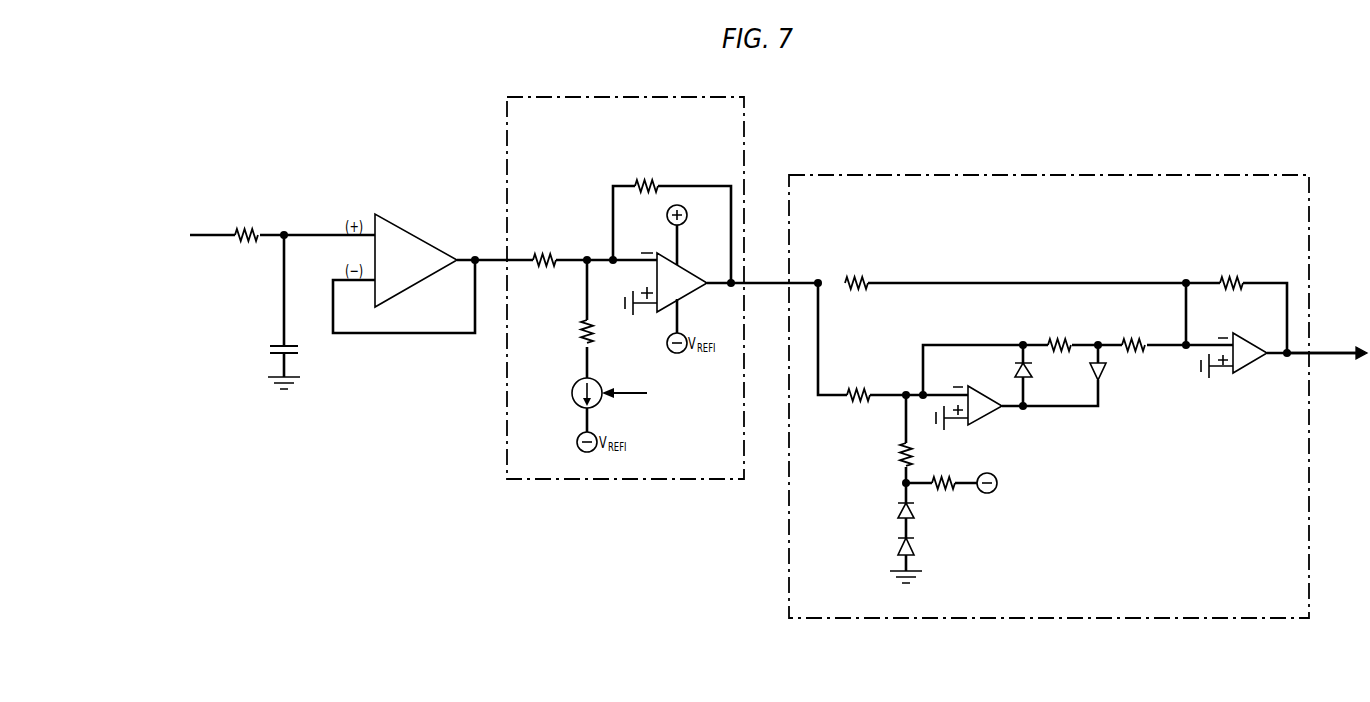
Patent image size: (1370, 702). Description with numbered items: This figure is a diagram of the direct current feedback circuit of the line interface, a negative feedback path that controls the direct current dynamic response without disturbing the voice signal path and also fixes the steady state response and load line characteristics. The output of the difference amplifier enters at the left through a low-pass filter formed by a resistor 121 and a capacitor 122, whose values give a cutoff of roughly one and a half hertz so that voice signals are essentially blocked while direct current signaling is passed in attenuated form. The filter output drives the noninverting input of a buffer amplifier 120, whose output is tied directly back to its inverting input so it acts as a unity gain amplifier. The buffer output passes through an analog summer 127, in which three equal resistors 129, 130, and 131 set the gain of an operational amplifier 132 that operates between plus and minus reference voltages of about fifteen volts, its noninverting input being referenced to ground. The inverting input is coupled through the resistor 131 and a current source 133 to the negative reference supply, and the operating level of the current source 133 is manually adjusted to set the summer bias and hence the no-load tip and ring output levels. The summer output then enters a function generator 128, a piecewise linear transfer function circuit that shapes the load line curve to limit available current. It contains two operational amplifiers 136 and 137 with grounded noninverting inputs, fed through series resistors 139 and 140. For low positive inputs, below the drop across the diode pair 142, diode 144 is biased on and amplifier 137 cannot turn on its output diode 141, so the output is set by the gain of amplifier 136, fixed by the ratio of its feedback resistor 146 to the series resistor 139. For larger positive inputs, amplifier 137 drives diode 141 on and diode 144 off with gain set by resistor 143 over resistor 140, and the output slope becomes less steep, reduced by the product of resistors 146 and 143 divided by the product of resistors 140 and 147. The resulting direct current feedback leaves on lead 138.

The buffer amplifier 120 is at (425, 239).
The resistor 121 is at (248, 225).
The capacitor 122 is at (270, 350).
The analog summer 127 is at (533, 96).
The function generator 128 is at (815, 174).
The resistor 129 is at (647, 173).
The resistor 130 is at (545, 249).
The resistor 131 is at (575, 334).
The operational amplifier 132 is at (690, 288).
The current source 133 is at (597, 393).
The operational amplifier 136 is at (1250, 365).
The operational amplifier 137 is at (984, 418).
The lead 138 is at (1330, 352).
The series resistor 139 is at (858, 272).
The series resistor 140 is at (859, 384).
The diode 141 is at (1112, 373).
The diode pair 142 is at (895, 497).
The resistor 143 is at (1060, 334).
The diode 144 is at (1010, 373).
The feedback resistor 146 is at (1232, 274).
The resistor 147 is at (1134, 334).